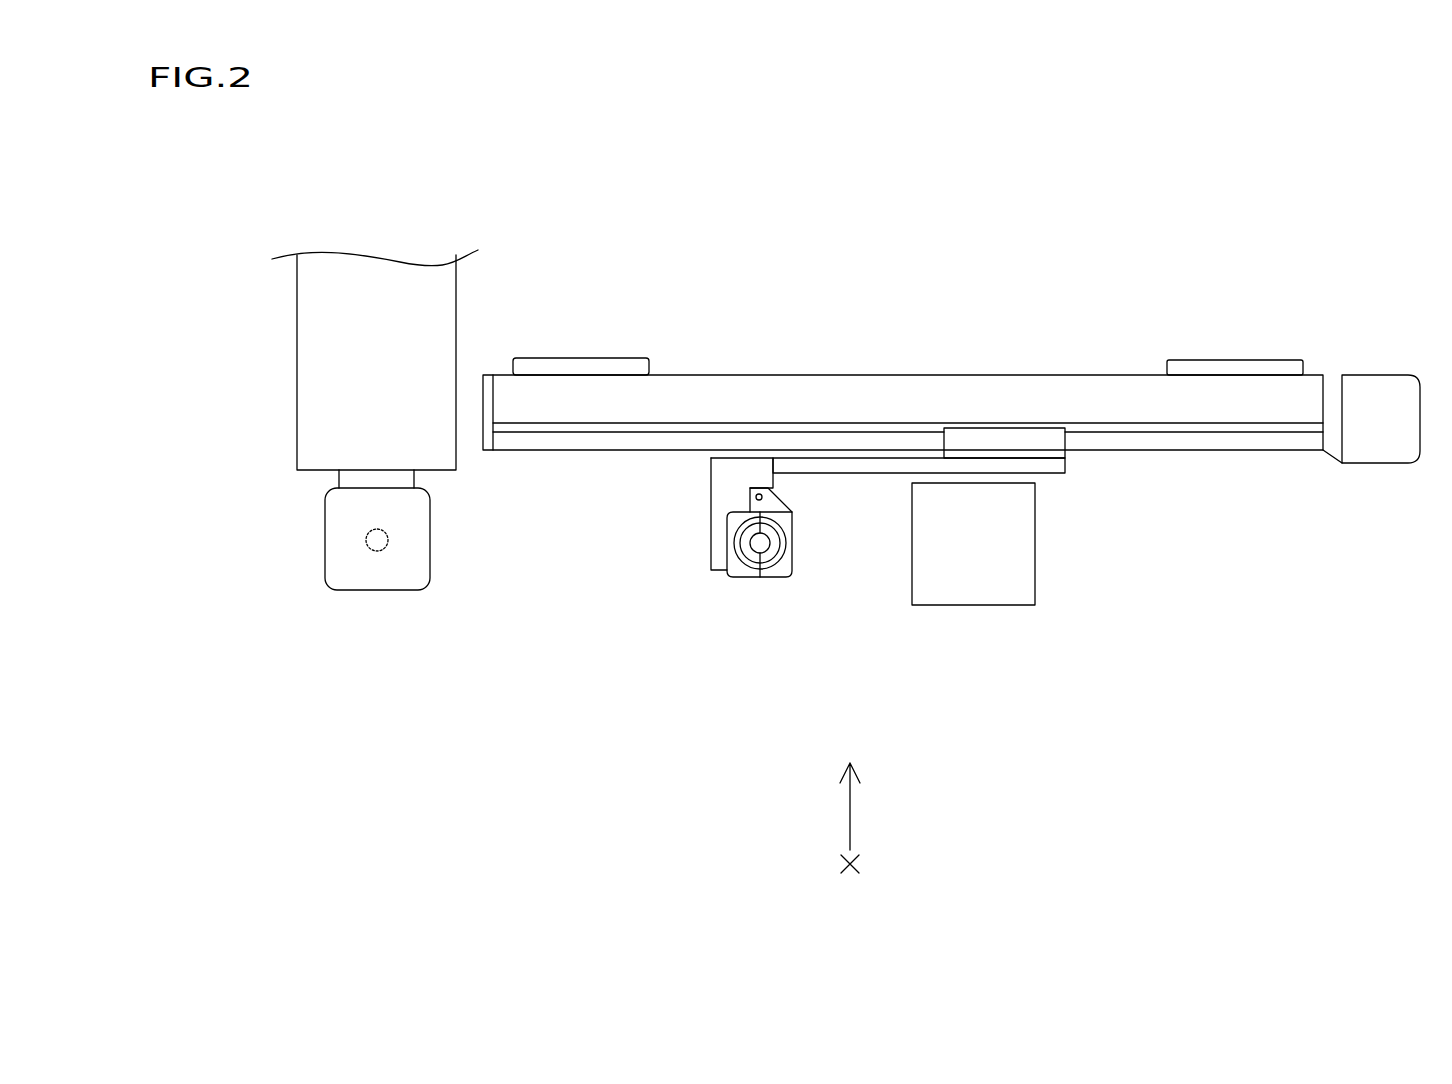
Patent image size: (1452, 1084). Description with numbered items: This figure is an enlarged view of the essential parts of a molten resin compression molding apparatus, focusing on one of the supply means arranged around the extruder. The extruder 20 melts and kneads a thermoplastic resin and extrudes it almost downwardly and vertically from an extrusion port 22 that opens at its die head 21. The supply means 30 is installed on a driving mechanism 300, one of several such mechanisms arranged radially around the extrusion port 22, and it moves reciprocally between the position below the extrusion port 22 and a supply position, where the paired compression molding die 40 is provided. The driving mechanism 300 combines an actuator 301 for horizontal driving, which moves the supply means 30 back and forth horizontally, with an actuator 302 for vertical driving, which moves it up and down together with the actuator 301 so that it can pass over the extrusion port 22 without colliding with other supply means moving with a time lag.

The extruder 20 is at (317, 357).
The die head 21 is at (335, 558).
The extrusion port 22 is at (368, 538).
The supply means 30 is at (738, 568).
The compression molding die 40 is at (972, 578).
The driving mechanism 300 is at (951, 332).
The actuator for horizontal driving 301 is at (1125, 442).
The actuator for vertical driving 302 is at (1107, 235).